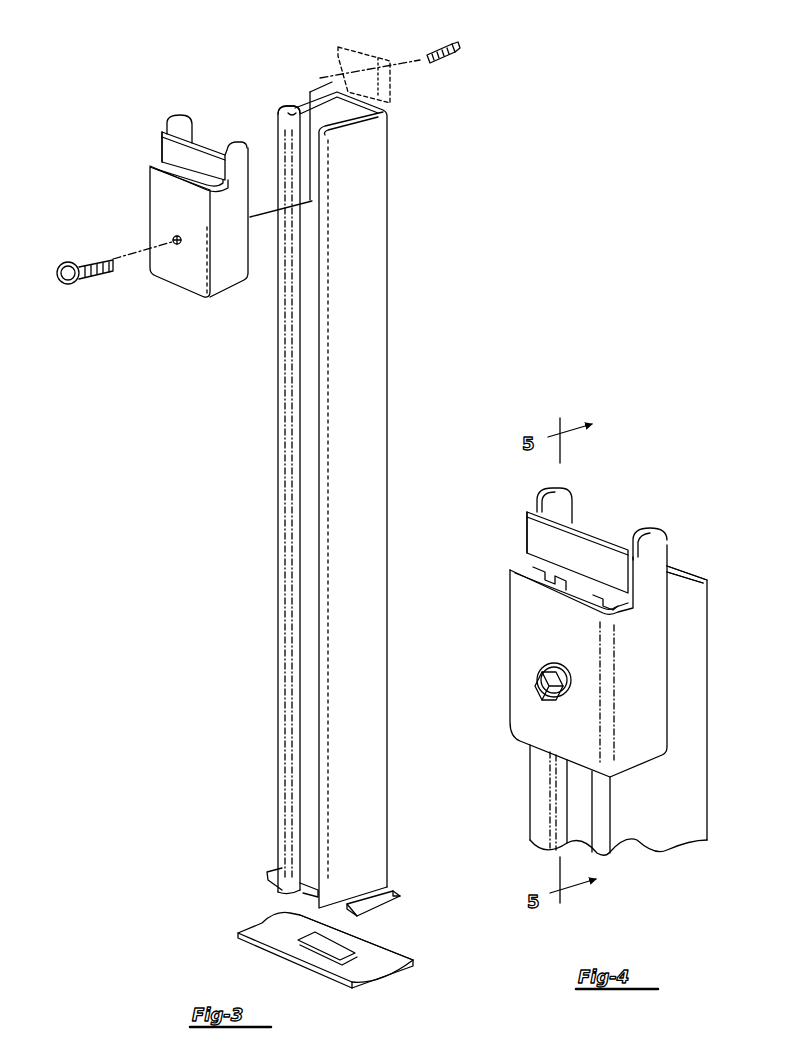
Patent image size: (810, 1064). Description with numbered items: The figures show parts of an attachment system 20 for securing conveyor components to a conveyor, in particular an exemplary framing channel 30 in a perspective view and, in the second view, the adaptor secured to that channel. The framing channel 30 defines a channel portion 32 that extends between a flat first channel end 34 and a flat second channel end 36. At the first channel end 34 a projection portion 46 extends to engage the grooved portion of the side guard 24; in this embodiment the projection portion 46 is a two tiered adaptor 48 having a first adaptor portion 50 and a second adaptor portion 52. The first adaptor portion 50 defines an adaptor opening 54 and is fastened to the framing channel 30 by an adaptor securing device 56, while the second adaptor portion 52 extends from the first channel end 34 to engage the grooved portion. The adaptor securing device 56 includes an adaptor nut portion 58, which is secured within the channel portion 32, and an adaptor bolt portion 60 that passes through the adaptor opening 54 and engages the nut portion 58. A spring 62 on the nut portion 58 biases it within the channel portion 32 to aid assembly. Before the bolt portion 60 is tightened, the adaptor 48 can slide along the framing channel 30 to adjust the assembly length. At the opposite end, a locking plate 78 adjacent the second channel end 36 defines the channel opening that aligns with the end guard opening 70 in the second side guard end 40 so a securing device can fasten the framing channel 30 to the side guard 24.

In FIG. 3, the attachment system 20 is at (203, 445).
In FIG. 3, the side guard 24 is at (385, 978).
In FIG. 3, the framing channel 30 is at (377, 205).
In FIG. 4, the framing channel 30 is at (637, 823).
In FIG. 3, the channel portion 32 is at (312, 798).
In FIG. 4, the channel portion 32 is at (580, 822).
In FIG. 3, the first channel end 34 is at (388, 110).
In FIG. 4, the first channel end 34 is at (690, 577).
In FIG. 3, the second channel end 36 is at (292, 893).
In FIG. 3, the second side guard end 40 is at (382, 960).
In FIG. 3, the projection portion 46 is at (177, 117).
In FIG. 4, the projection portion 46 is at (647, 530).
In FIG. 3, the two tiered adaptor 48 is at (163, 160).
In FIG. 4, the two tiered adaptor 48 is at (533, 563).
In FIG. 3, the first adaptor portion 50 is at (157, 197).
In FIG. 4, the first adaptor portion 50 is at (520, 633).
In FIG. 3, the second adaptor portion 52 is at (168, 140).
In FIG. 4, the second adaptor portion 52 is at (537, 525).
In FIG. 3, the adaptor opening 54 is at (175, 245).
In FIG. 3, the adaptor securing device 56 is at (78, 247).
In FIG. 4, the adaptor securing device 56 is at (557, 653).
In FIG. 3, the adaptor nut portion 58 is at (360, 50).
In FIG. 3, the adaptor bolt portion 60 is at (62, 285).
In FIG. 4, the adaptor bolt portion 60 is at (530, 688).
In FIG. 3, the spring 62 is at (457, 50).
In FIG. 3, the end guard opening 70 is at (315, 931).
In FIG. 3, the locking plate 78 is at (402, 897).